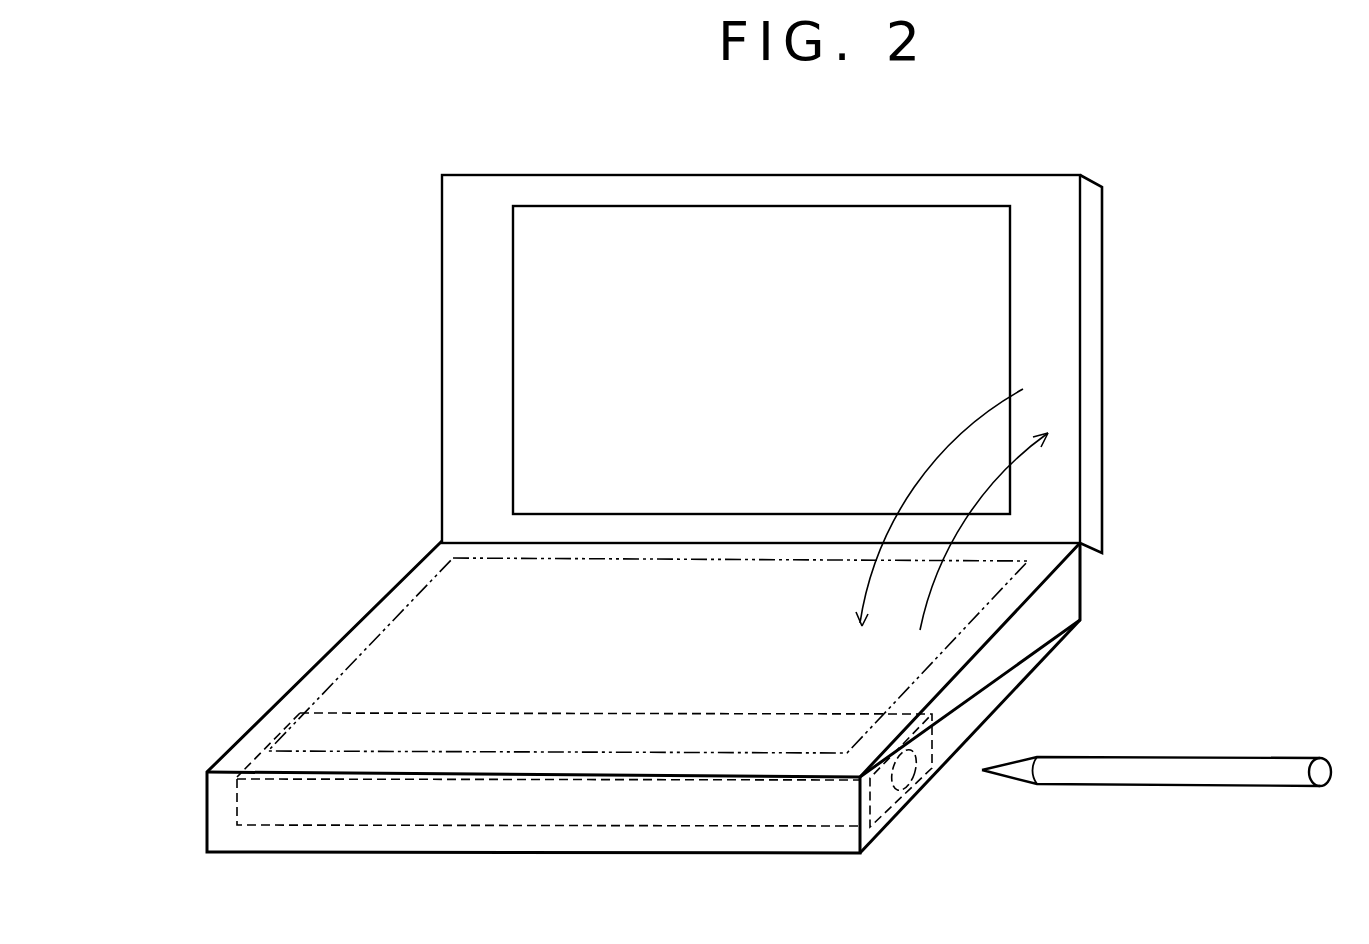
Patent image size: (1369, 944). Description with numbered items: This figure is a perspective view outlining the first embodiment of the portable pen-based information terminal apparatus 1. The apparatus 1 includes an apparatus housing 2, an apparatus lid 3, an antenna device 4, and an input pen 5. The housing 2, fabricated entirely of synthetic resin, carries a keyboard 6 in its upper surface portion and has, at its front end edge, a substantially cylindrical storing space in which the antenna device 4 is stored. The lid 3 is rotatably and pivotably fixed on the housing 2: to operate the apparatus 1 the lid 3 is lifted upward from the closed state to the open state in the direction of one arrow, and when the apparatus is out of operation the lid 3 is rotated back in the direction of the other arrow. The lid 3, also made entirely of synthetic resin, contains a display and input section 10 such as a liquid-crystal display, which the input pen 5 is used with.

The portable pen-based information terminal apparatus 1 is at (925, 110).
The apparatus housing 2 is at (1072, 598).
The apparatus lid 3 is at (1096, 331).
The antenna device 4 is at (806, 818).
The input pen 5 is at (1190, 783).
The keyboard 6 is at (430, 642).
The display and input section 10 is at (738, 219).